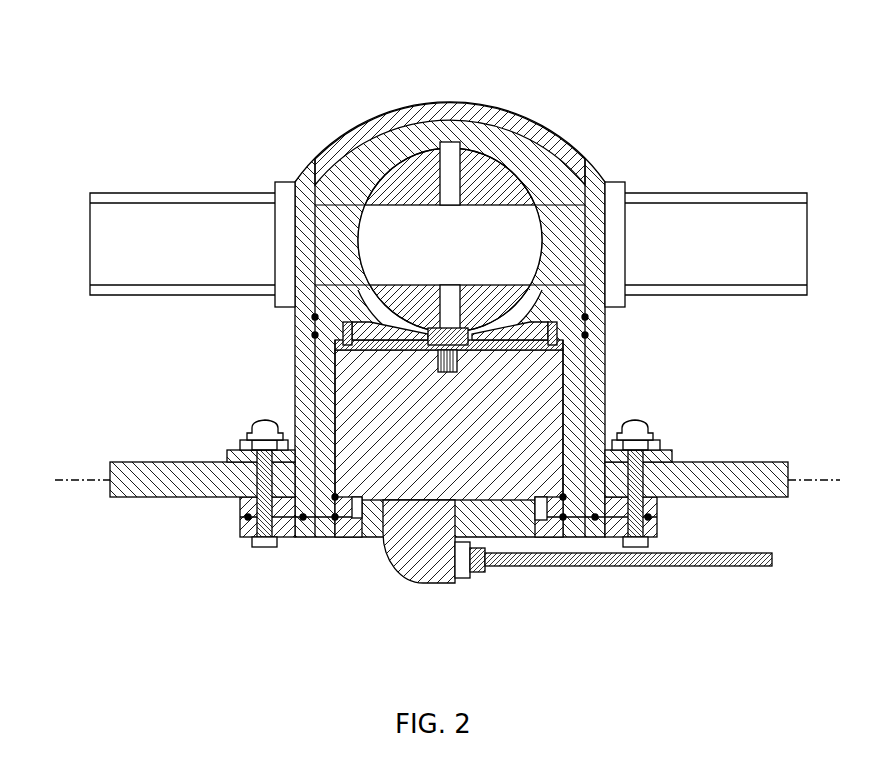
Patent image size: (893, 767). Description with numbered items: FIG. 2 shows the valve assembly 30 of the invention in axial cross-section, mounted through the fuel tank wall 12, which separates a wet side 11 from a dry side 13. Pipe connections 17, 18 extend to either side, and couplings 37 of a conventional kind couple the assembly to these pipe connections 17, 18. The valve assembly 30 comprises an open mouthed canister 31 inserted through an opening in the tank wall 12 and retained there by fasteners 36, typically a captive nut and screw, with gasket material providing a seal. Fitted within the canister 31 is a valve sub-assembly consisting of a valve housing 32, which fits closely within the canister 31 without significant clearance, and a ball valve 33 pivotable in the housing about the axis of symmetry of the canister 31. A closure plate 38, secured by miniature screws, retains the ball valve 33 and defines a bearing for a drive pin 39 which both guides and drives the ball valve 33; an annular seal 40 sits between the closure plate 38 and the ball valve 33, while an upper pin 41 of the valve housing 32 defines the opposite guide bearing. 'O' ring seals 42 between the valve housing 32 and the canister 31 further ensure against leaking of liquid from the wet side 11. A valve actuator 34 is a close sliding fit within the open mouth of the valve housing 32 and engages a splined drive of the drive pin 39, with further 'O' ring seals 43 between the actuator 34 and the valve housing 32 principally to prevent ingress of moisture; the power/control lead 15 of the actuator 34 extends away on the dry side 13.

The wet side 11 is at (759, 404).
The fuel tank wall 12 is at (143, 498).
The dry side 13 is at (234, 634).
The power/control lead 15 is at (713, 568).
The pipe connection 17 is at (173, 228).
The pipe connection 18 is at (737, 227).
The valve assembly 30 is at (122, 384).
The canister 31 is at (598, 370).
The valve housing 32 is at (318, 375).
The ball valve 33 is at (397, 181).
The valve actuator 34 is at (411, 513).
The fasteners 36 is at (243, 450).
The couplings 37 is at (272, 179).
The closure plate 38 is at (420, 330).
The drive pin 39 is at (470, 335).
The annular seal 40 is at (350, 318).
The upper pin 41 is at (451, 150).
The 'O' ring seals 42 is at (589, 336).
The 'O' ring seals 43 is at (335, 520).